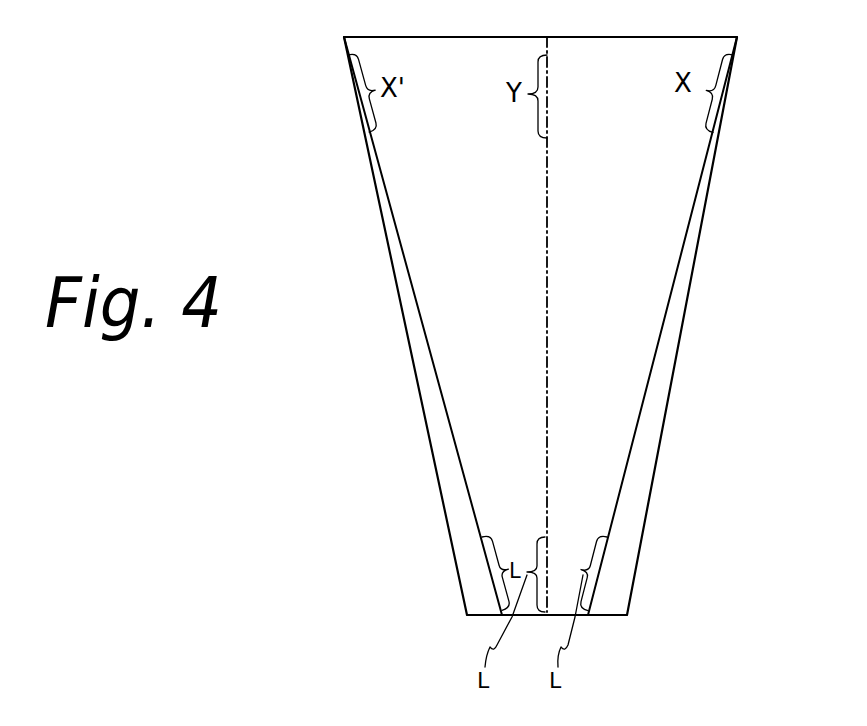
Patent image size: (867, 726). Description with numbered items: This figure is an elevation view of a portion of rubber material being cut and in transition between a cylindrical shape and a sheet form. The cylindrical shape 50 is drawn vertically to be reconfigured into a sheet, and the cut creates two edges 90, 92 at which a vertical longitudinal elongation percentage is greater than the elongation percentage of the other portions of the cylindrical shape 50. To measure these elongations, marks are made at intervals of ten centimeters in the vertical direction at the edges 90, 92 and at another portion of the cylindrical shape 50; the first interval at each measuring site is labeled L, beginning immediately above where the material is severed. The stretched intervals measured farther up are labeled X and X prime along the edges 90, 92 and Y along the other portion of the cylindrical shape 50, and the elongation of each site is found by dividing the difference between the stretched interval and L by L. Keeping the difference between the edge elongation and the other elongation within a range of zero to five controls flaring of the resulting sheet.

The cylindrical shape 50 is at (560, 578).
The edge 90 is at (636, 428).
The edge 92 is at (453, 437).